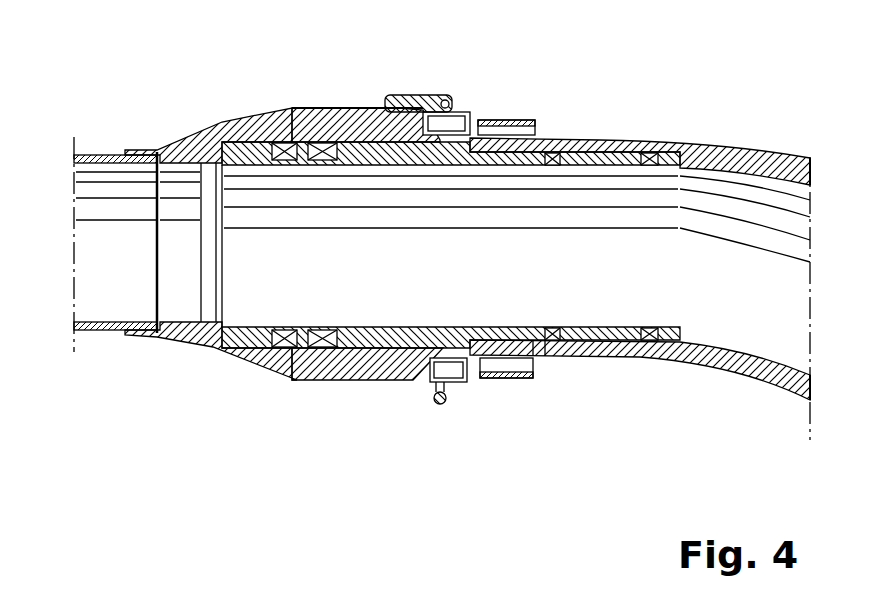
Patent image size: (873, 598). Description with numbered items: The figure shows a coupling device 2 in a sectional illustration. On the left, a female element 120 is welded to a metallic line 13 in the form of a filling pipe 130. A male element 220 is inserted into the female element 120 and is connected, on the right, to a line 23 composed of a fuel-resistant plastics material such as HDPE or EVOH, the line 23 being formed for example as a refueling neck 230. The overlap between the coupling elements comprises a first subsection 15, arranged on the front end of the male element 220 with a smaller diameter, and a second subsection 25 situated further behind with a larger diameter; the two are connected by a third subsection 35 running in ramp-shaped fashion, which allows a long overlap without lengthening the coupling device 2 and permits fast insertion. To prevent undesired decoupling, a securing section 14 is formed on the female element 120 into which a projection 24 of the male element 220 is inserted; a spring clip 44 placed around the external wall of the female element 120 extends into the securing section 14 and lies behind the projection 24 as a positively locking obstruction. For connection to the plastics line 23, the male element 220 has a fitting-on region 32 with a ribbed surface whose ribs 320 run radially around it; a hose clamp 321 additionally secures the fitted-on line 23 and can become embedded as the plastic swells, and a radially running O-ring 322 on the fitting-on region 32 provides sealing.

The coupling device 2 is at (377, 261).
The metallic line 13 is at (106, 333).
The filling pipe 130 is at (137, 295).
The female element 120 is at (193, 347).
The first subsection 15 is at (233, 130).
The second subsection 25 is at (378, 108).
The third subsection 35 is at (349, 108).
The fitting-on region 32 is at (590, 140).
The male element 220 is at (254, 372).
The ribs 320 is at (557, 140).
The hose clamp 321 is at (535, 378).
The O-ring 322 is at (650, 357).
The projection 24 is at (412, 383).
The securing section 14 is at (471, 372).
The spring clip 44 is at (450, 98).
The line 23 is at (718, 145).
The refueling neck 230 is at (785, 160).